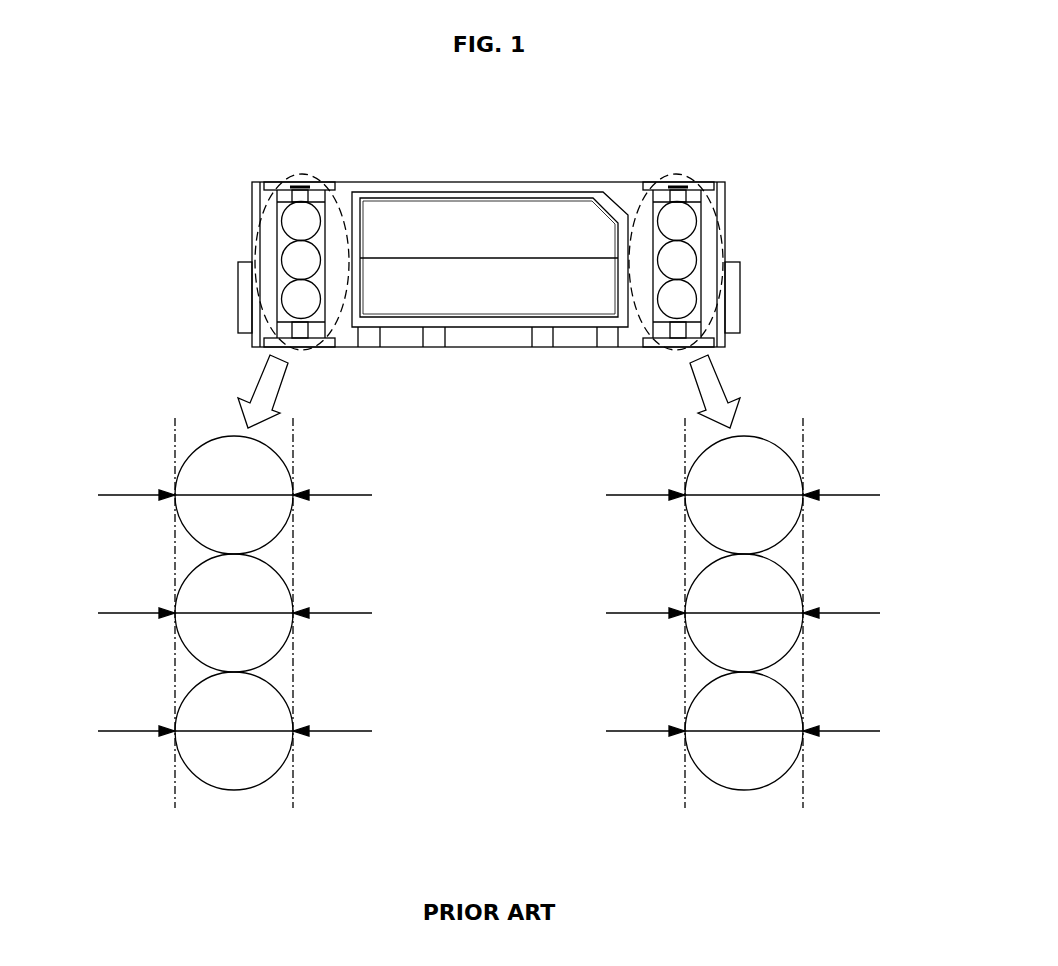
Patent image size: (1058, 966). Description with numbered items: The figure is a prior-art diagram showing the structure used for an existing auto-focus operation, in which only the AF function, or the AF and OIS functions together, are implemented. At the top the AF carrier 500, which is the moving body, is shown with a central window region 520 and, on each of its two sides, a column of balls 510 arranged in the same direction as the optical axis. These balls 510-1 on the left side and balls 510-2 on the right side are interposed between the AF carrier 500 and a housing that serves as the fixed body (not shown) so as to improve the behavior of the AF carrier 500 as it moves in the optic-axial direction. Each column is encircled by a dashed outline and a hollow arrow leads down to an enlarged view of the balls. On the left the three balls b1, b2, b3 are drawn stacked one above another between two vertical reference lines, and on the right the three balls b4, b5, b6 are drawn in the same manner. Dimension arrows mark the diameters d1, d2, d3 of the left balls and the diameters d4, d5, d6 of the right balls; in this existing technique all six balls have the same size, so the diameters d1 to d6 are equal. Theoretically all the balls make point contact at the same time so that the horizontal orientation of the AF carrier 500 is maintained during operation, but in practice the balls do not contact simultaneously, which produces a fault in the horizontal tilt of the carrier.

The AF carrier 500 is at (441, 183).
The balls 510 is at (488, 262).
The balls 510-1 is at (298, 265).
The balls 510-2 is at (680, 265).
The display window / chamber 520 is at (485, 297).
The ball b1 is at (190, 478).
The ball b2 is at (190, 596).
The ball b3 is at (190, 714).
The ball b4 is at (790, 478).
The ball b5 is at (790, 596).
The ball b6 is at (790, 714).
The diameter d1 is at (235, 486).
The diameter d2 is at (235, 604).
The diameter d3 is at (235, 722).
The diameter d4 is at (743, 486).
The diameter d5 is at (743, 604).
The diameter d6 is at (743, 722).